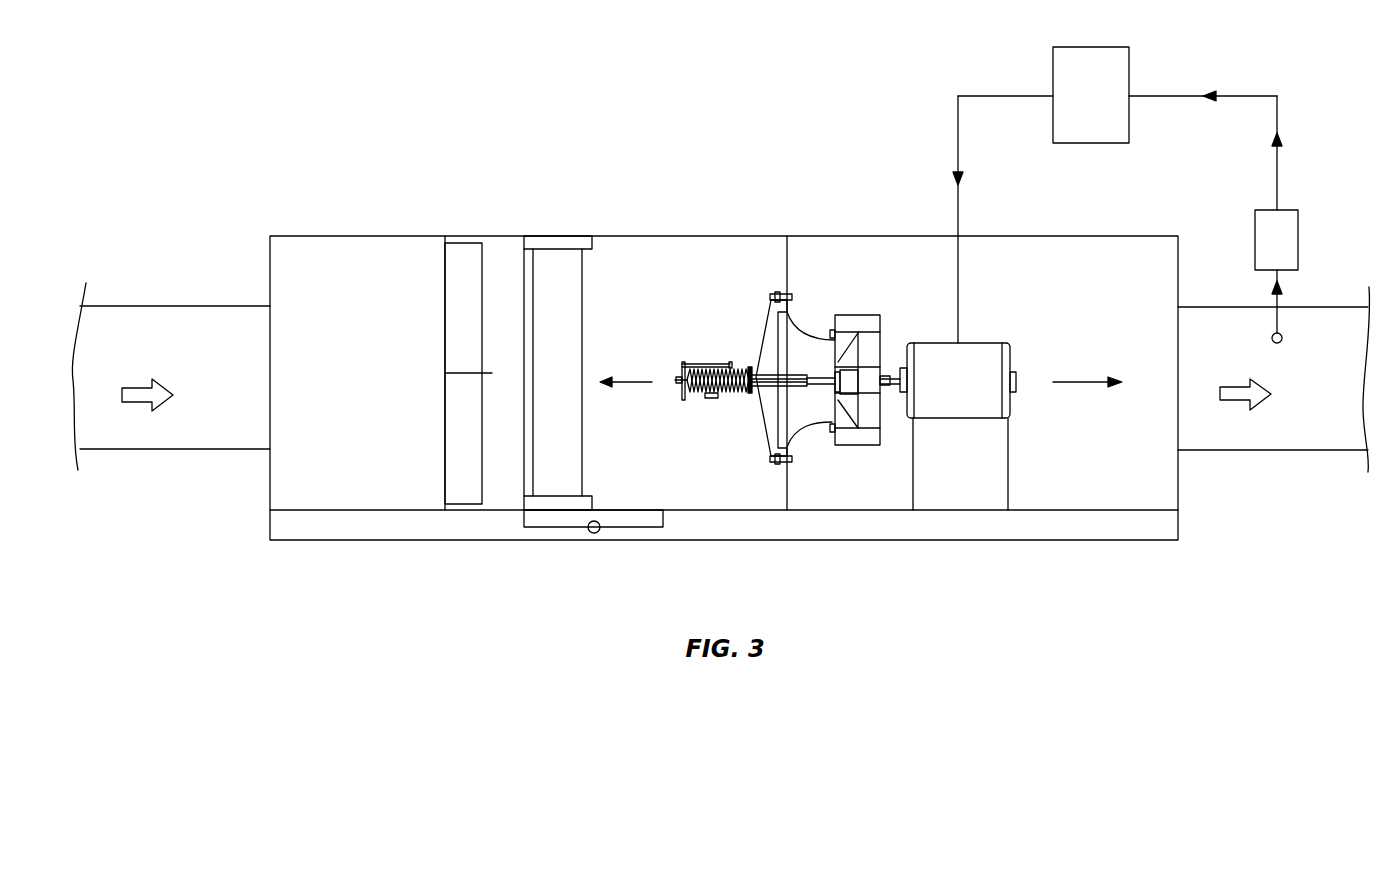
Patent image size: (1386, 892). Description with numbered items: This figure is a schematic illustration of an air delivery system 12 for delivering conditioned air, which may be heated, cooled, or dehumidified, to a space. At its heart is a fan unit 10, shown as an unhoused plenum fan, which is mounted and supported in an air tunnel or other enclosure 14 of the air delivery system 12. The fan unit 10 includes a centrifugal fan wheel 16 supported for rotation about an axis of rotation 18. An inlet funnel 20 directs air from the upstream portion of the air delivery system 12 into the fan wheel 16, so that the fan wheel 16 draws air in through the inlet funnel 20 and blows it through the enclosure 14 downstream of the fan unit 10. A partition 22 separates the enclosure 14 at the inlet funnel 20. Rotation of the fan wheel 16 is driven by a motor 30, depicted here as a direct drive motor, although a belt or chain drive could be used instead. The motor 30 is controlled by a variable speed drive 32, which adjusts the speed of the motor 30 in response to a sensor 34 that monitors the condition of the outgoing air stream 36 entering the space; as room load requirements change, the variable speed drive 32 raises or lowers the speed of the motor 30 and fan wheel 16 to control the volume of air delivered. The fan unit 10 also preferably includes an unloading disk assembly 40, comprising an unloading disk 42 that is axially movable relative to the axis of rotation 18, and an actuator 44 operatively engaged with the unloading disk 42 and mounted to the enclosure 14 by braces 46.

The fan unit 10 is at (757, 373).
The air delivery system 12 is at (411, 539).
The enclosure 14 is at (357, 234).
The centrifugal fan wheel 16 is at (858, 447).
The axis of rotation 18 is at (1087, 382).
The inlet funnel 20 is at (832, 422).
The partition 22 is at (790, 255).
The motor 30 is at (952, 418).
The variable speed drive 32 is at (1092, 47).
The sensor 34 is at (1282, 337).
The outgoing air stream 36 is at (1317, 427).
The unloading disk assembly 40 is at (737, 393).
The unloading disk 42 is at (852, 360).
The actuator 44 is at (712, 365).
The braces 46 is at (773, 440).